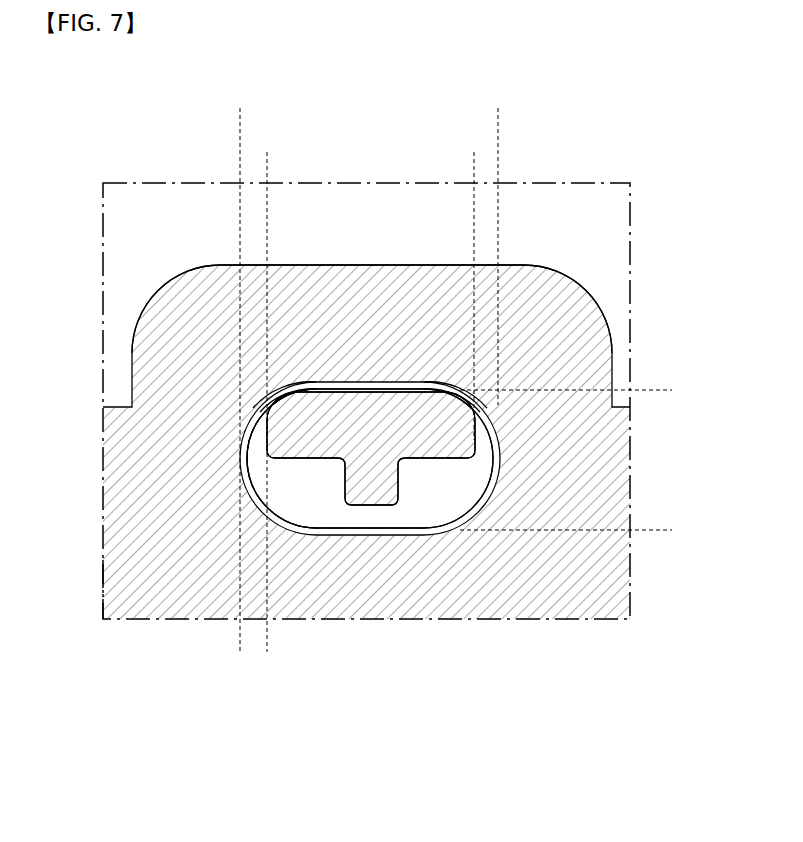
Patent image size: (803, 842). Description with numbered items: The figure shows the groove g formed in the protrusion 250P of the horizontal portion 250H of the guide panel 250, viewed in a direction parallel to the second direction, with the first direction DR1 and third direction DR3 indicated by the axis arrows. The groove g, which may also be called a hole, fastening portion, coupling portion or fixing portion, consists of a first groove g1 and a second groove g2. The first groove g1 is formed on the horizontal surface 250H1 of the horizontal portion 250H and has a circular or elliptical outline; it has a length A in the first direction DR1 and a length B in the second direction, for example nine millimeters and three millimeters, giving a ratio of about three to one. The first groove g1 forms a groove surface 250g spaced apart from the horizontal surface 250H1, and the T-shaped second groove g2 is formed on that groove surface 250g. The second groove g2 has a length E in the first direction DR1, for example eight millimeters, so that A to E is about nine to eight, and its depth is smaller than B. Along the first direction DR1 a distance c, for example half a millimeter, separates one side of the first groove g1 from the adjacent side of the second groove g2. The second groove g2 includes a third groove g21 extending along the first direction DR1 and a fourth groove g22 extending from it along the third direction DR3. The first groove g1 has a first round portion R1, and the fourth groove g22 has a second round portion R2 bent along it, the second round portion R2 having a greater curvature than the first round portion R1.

The guide panel 250 is at (129, 100).
The horizontal portion 250H is at (165, 578).
The horizontal surface 250H1 is at (150, 631).
The protrusion 250P is at (560, 298).
The groove surface 250g is at (467, 488).
The groove g is at (388, 697).
The first groove g1 is at (317, 495).
The second groove g2 is at (362, 435).
The third groove g21 is at (427, 427).
The fourth groove g22 is at (382, 480).
The first round portion R1 is at (291, 406).
The second round portion R2 is at (253, 410).
The length of the first groove in the first direction A is at (498, 115).
The length of the second groove in the first direction E is at (474, 160).
The length of the first groove in the second direction B is at (658, 391).
The distance between sides of the first and second grooves c is at (303, 643).
The first direction DR1 is at (103, 745).
The third direction DR3 is at (103, 745).